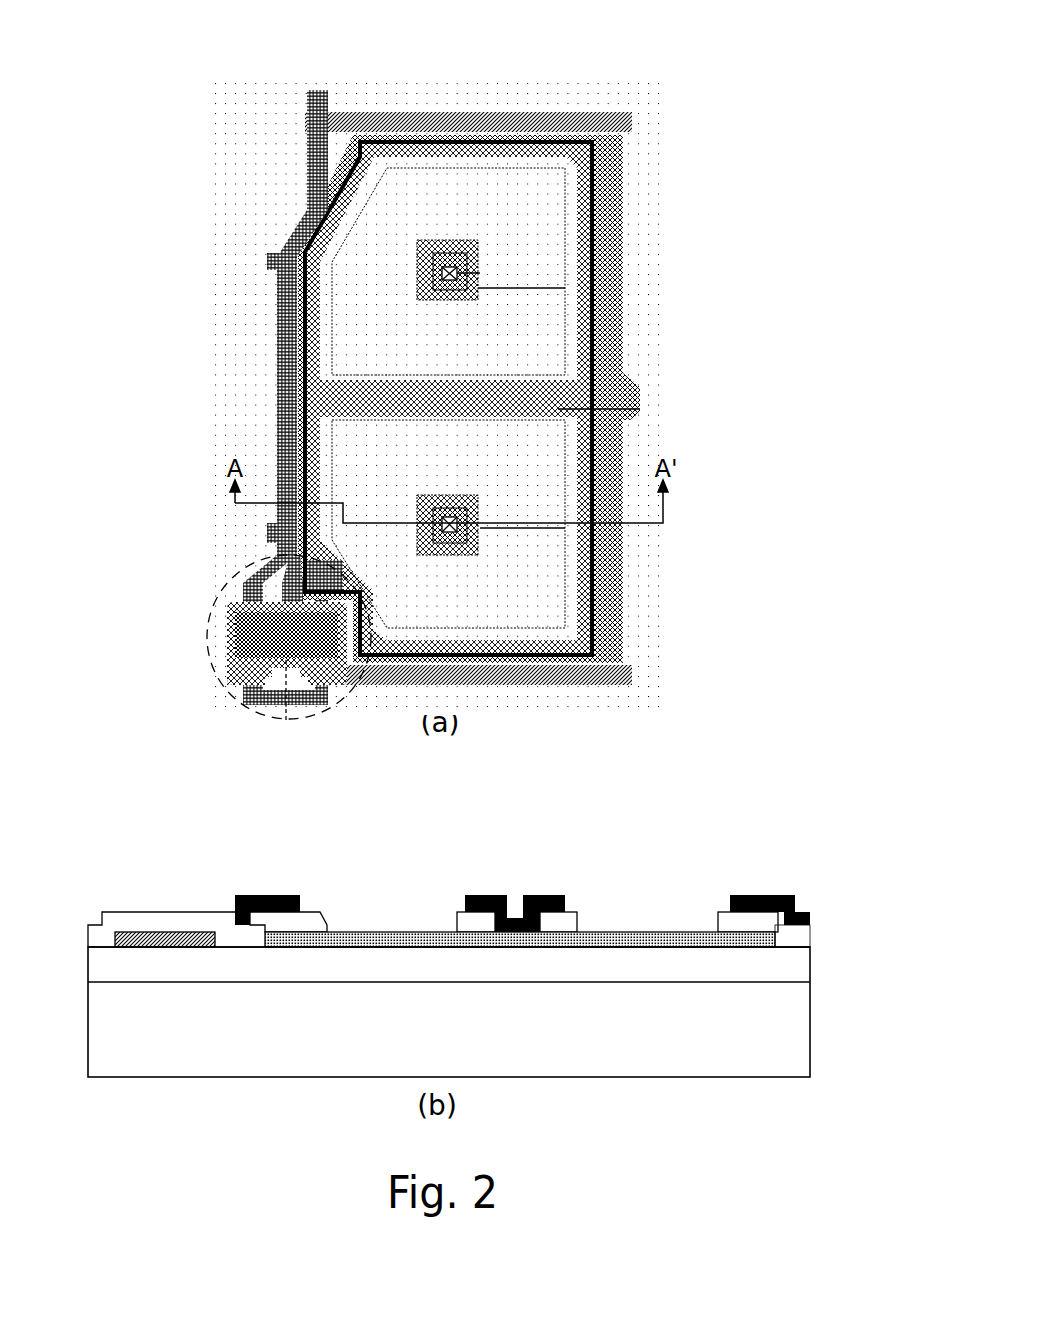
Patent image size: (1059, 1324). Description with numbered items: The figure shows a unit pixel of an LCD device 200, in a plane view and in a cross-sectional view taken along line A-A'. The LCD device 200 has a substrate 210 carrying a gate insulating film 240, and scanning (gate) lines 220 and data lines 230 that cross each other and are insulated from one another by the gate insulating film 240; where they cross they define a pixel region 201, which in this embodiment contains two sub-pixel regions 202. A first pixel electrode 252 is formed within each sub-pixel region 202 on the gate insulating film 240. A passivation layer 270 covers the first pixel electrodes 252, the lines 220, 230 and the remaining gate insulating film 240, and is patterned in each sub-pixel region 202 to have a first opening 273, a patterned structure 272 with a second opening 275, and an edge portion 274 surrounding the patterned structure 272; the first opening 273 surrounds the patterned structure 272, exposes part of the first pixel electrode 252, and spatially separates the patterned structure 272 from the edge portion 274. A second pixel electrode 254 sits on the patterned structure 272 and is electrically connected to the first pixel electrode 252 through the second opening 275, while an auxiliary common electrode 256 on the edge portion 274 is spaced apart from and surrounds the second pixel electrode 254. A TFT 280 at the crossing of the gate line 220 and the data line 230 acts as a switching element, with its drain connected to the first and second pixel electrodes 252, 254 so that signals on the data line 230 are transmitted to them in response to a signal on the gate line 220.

The LCD device 200 is at (485, 44).
The pixel region 201 is at (708, 360).
The sub-pixel region 202 is at (429, 194).
The substrate 210 is at (751, 1054).
The scanning line 220 is at (625, 121).
The data line 230 is at (285, 318).
The gate insulating film 240 is at (751, 976).
The first pixel electrode 252 is at (540, 468).
The second pixel electrode 254 is at (447, 517).
The auxiliary common electrode 256 is at (610, 608).
The passivation layer 270 is at (92, 910).
The patterned structure 272 is at (425, 537).
The first opening 273 is at (530, 603).
The edge portion 274 is at (570, 560).
The second opening 275 is at (516, 938).
The TFT 280 is at (213, 668).